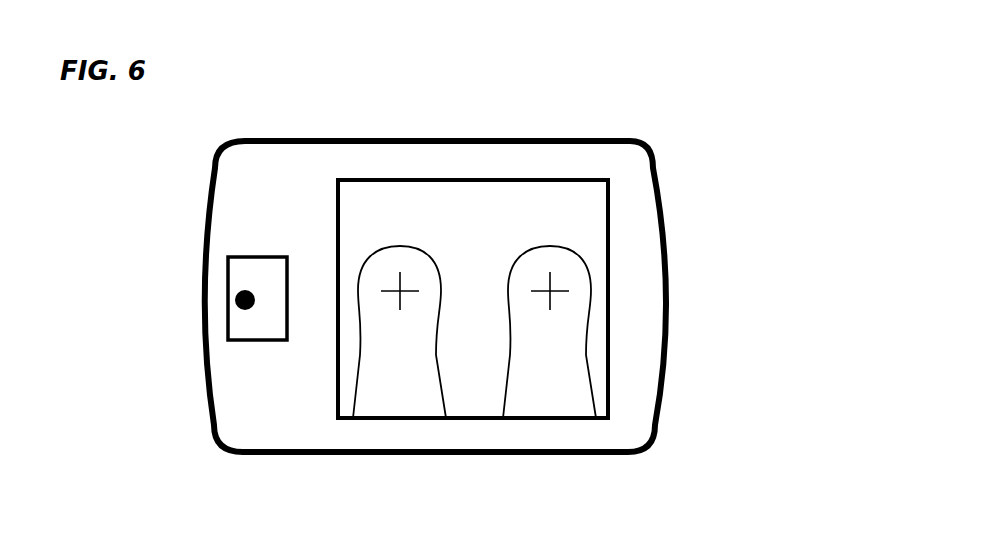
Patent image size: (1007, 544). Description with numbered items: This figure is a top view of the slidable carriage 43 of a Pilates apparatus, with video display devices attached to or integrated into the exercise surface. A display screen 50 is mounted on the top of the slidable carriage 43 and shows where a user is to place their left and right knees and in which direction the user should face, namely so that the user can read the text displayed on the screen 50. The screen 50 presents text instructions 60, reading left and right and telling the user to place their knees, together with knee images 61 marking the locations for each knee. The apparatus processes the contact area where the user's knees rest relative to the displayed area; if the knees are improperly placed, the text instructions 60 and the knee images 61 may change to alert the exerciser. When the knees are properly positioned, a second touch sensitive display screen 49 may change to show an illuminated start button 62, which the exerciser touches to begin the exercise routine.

The slidable carriage 43 is at (651, 442).
The second touch sensitive display screen 49 is at (242, 257).
The display screen 50 is at (523, 180).
The text instructions 60 is at (597, 211).
The knee images 61 is at (588, 320).
The start button 62 is at (255, 311).